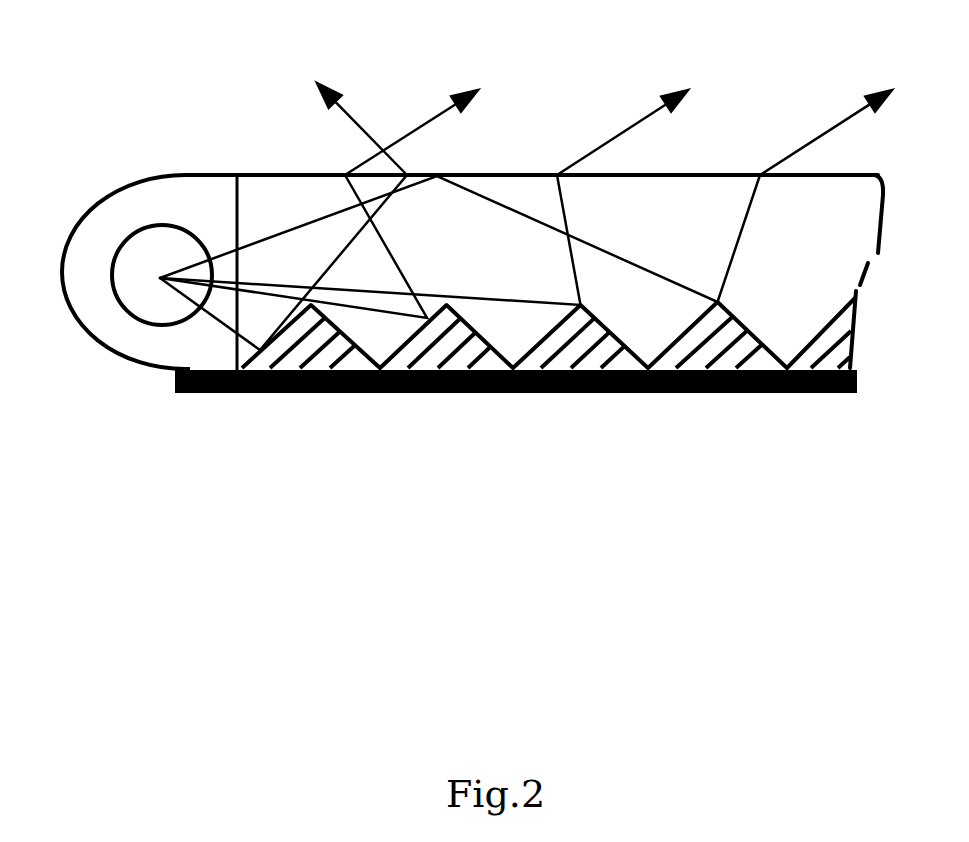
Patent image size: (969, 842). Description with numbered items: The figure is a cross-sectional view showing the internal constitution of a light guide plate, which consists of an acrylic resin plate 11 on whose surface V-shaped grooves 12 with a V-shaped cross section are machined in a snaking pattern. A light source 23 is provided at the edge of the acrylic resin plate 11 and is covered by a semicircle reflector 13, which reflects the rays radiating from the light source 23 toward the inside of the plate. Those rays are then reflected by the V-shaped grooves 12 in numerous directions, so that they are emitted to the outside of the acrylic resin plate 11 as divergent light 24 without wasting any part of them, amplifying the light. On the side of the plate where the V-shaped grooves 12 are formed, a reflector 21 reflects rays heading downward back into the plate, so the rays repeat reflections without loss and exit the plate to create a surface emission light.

The acrylic resin plate 11 is at (534, 197).
The V-shaped grooves 12 is at (548, 376).
The semicircle reflector 13 is at (126, 233).
The reflector 21 is at (516, 418).
The light source 23 is at (122, 321).
The divergent light 24 is at (604, 109).